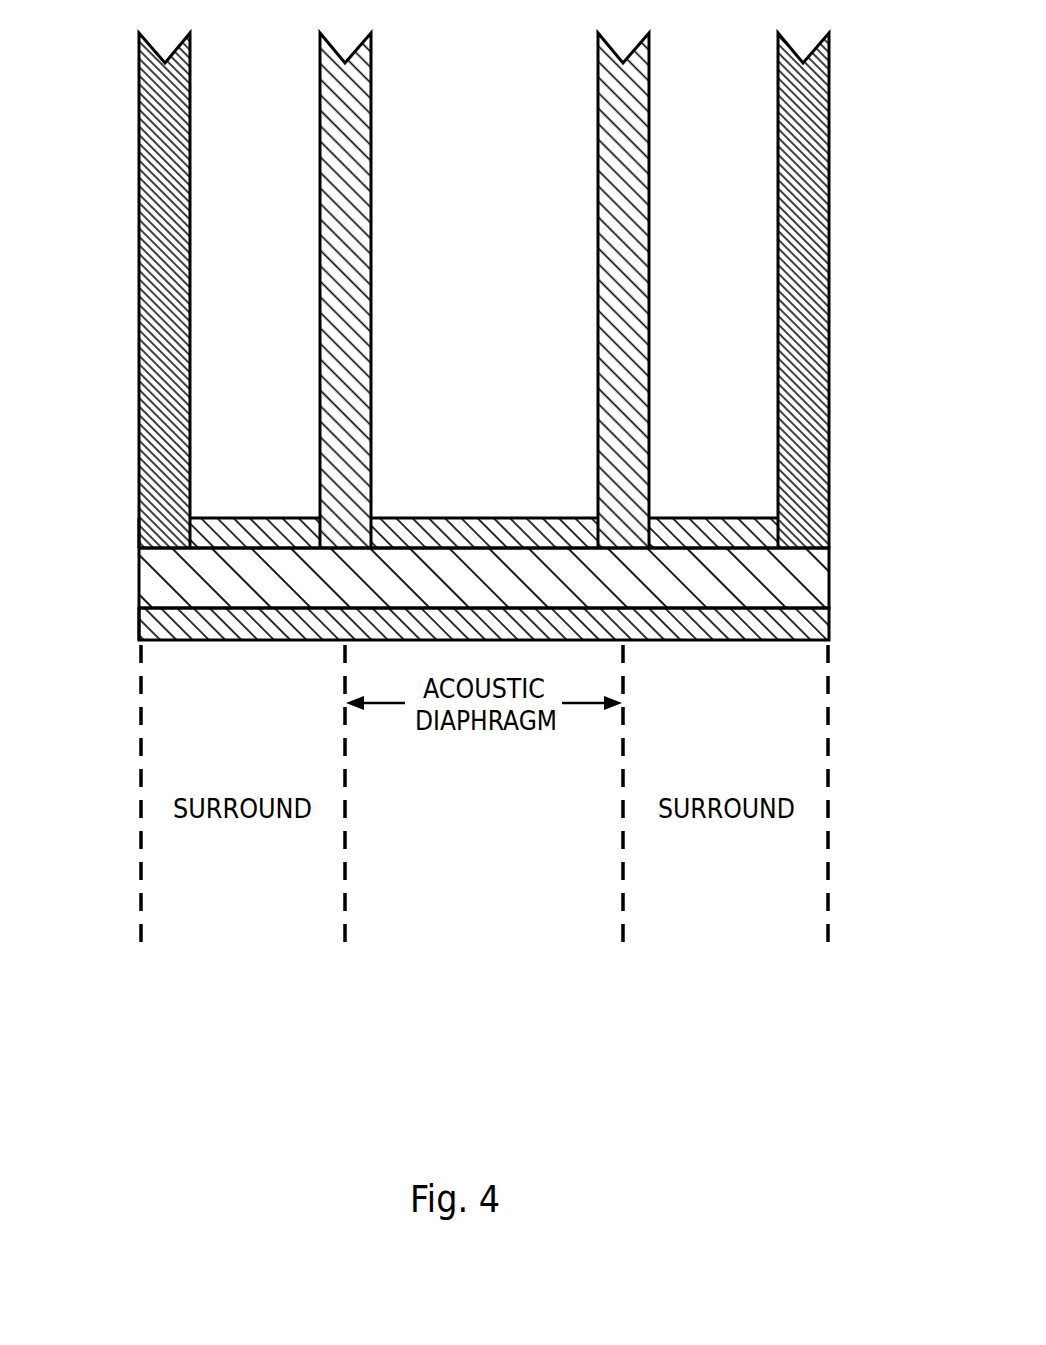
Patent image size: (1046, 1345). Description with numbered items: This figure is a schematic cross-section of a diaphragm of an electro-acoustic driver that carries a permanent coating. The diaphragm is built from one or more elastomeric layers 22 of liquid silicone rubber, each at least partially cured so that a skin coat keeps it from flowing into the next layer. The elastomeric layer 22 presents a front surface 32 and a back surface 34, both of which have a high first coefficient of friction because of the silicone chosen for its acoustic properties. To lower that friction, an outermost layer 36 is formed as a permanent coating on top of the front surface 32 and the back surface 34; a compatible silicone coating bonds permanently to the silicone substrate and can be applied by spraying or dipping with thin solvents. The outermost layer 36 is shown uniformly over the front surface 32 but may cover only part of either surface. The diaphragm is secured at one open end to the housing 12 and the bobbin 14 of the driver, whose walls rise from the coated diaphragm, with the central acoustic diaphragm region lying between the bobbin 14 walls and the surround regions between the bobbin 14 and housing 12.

The housing 12 is at (139, 337).
The bobbin 14 is at (319, 337).
The elastomeric layer 22 is at (829, 585).
The front surface 32 is at (829, 613).
The back surface 34 is at (829, 548).
The outermost layer 36 is at (139, 530).